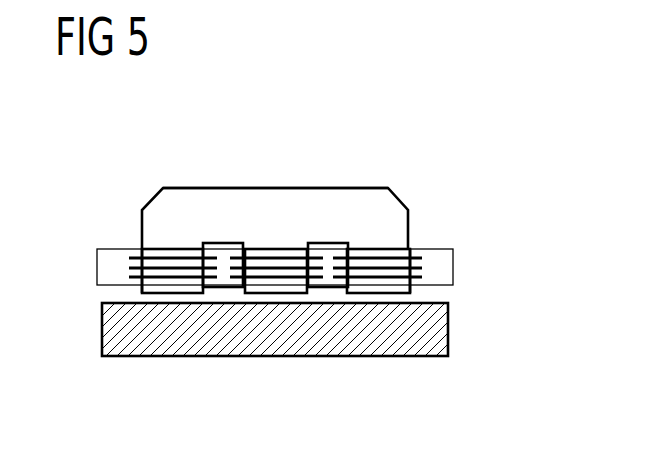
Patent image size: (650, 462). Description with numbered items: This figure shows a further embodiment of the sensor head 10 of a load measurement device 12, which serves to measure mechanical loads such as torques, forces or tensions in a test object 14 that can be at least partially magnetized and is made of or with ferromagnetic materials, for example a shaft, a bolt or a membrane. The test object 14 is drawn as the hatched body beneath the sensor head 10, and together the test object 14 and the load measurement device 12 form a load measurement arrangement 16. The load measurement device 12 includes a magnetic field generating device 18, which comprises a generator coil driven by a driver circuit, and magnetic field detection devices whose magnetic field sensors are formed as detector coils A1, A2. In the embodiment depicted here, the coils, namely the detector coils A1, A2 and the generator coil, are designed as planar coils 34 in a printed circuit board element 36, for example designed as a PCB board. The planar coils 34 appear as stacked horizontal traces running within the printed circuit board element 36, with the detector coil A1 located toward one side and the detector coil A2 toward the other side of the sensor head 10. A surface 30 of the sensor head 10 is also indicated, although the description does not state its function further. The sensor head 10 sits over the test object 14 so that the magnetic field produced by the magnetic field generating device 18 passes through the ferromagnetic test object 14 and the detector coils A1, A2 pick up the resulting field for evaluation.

The load measurement arrangement 16 is at (110, 170).
The load measurement device 12 is at (361, 128).
The sensor head 10 is at (240, 159).
The top side of housing 30 is at (290, 197).
The magnetic field generating device 18 is at (257, 255).
The planar coils 34 is at (197, 260).
The detector coil A1 is at (142, 247).
The detector coil A2 is at (410, 247).
The printed circuit board element 36 is at (445, 270).
The test object 14 is at (168, 348).